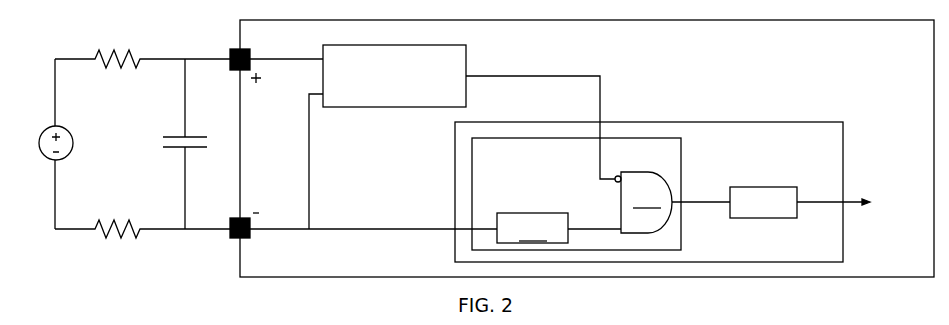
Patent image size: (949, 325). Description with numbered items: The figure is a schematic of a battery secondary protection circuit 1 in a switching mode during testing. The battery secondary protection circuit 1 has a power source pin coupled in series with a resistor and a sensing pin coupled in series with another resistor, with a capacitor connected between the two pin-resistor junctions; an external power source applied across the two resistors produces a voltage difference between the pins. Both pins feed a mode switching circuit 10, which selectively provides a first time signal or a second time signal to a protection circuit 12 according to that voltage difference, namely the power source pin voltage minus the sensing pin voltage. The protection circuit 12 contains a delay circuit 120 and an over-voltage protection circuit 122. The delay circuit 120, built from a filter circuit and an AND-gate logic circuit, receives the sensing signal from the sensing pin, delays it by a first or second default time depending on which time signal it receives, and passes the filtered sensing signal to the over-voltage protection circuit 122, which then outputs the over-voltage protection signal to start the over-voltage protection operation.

The battery secondary protection circuit 1 is at (911, 53).
The mode switching circuit 10 is at (441, 98).
The protection circuit 12 is at (831, 257).
The delay circuit 120 is at (510, 162).
The over-voltage protection circuit 122 is at (780, 215).